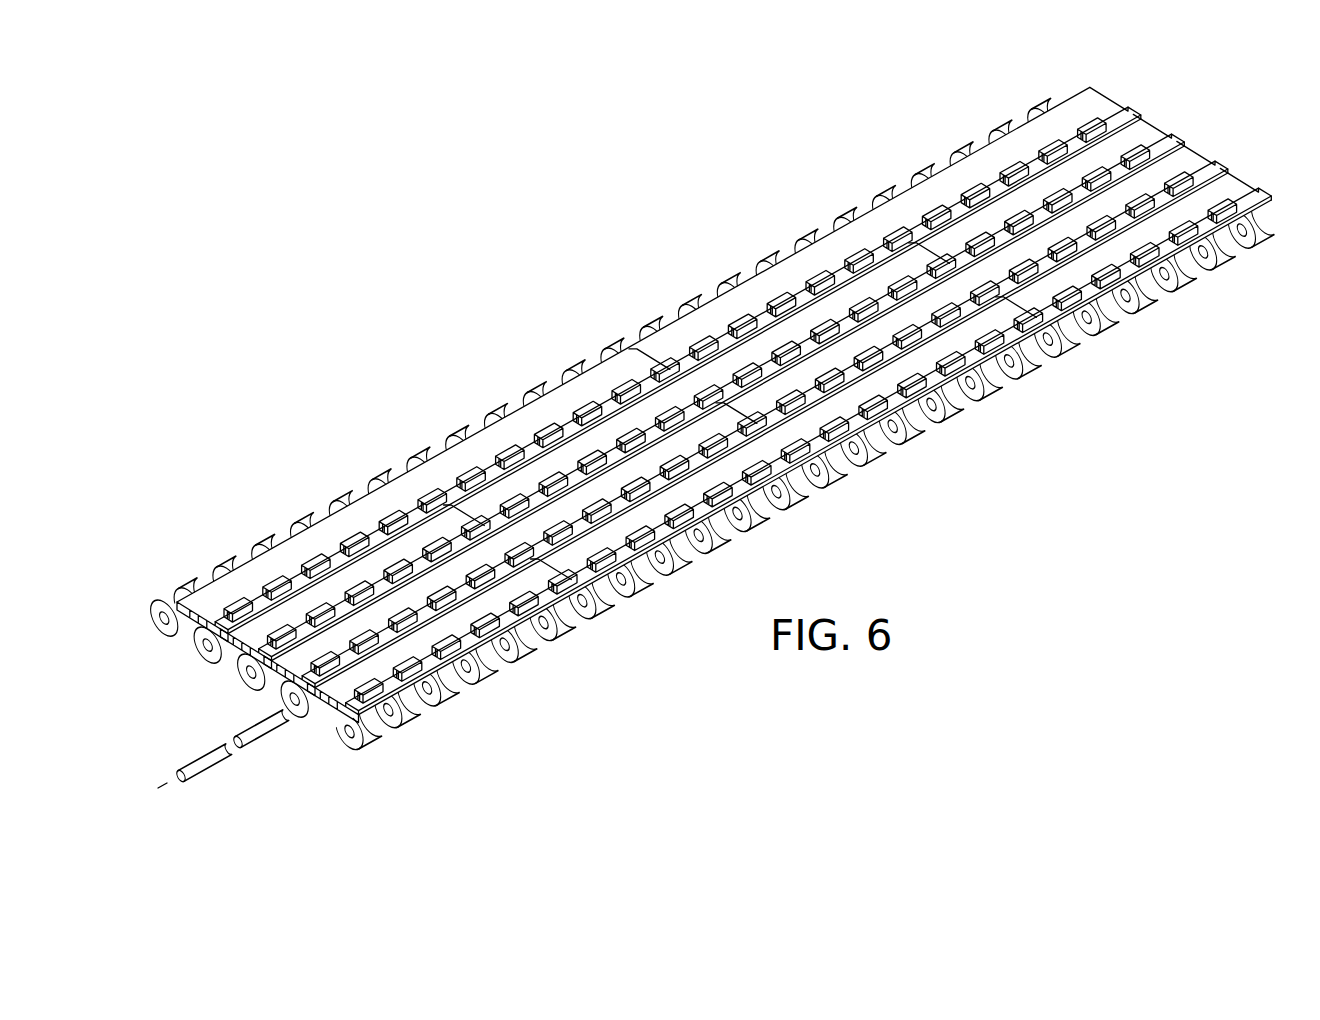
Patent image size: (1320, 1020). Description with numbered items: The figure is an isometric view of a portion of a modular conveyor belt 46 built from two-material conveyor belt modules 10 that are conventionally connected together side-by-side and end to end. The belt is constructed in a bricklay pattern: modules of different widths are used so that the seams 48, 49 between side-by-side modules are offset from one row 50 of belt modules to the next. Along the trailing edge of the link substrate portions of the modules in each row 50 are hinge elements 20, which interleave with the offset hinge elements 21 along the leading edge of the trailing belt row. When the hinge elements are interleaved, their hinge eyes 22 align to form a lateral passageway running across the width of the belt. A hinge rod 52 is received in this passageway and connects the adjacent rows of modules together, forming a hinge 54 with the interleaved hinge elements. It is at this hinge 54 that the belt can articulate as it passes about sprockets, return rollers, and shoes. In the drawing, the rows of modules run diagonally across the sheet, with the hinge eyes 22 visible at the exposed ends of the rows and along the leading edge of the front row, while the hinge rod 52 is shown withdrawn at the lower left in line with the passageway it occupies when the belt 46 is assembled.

The two-material conveyor belt module 10 is at (721, 440).
The hinge element 20 is at (682, 560).
The offset hinge element 21 is at (511, 402).
The hinge eye 22 is at (208, 648).
The modular conveyor belt 46 is at (648, 240).
The seam 48 is at (1026, 326).
The seam 49 is at (912, 240).
The row of belt modules 50 is at (661, 355).
The hinge rod 52 is at (254, 735).
The hinge 54 is at (1222, 172).